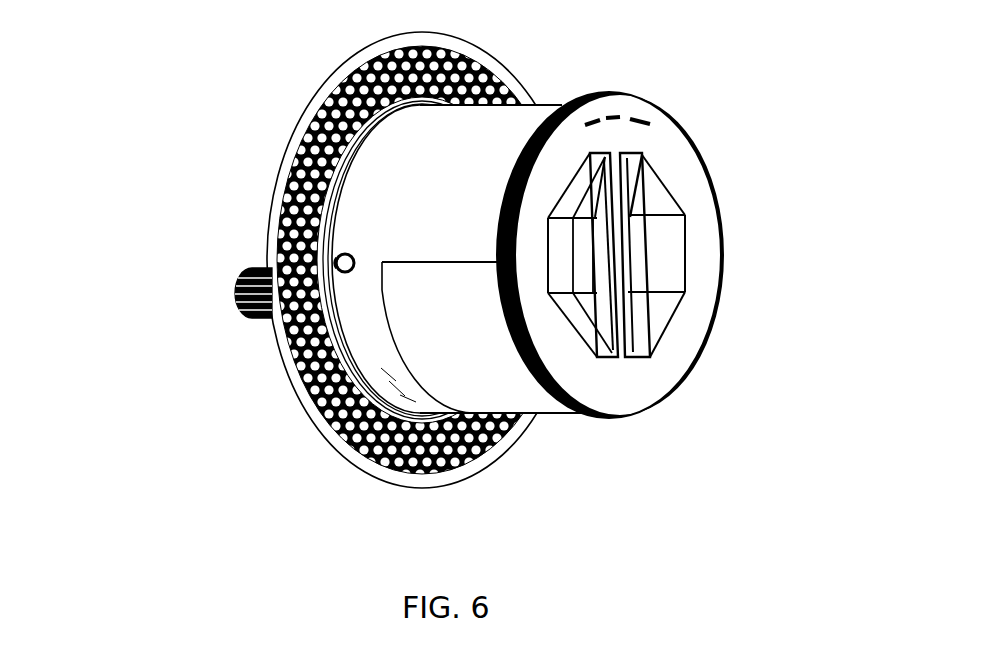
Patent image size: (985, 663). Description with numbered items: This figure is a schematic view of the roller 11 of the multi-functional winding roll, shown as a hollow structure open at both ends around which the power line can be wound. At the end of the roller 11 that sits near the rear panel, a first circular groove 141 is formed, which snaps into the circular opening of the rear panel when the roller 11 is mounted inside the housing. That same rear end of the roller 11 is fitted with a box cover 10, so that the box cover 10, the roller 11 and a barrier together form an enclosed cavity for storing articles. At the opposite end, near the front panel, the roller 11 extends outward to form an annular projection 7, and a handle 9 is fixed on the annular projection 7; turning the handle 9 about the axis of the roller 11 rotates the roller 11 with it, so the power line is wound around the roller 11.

The annular projection 7 is at (328, 78).
The handle 9 is at (240, 302).
The roller 11 is at (442, 207).
The first circular groove 141 is at (518, 270).
The box cover 10 is at (577, 345).